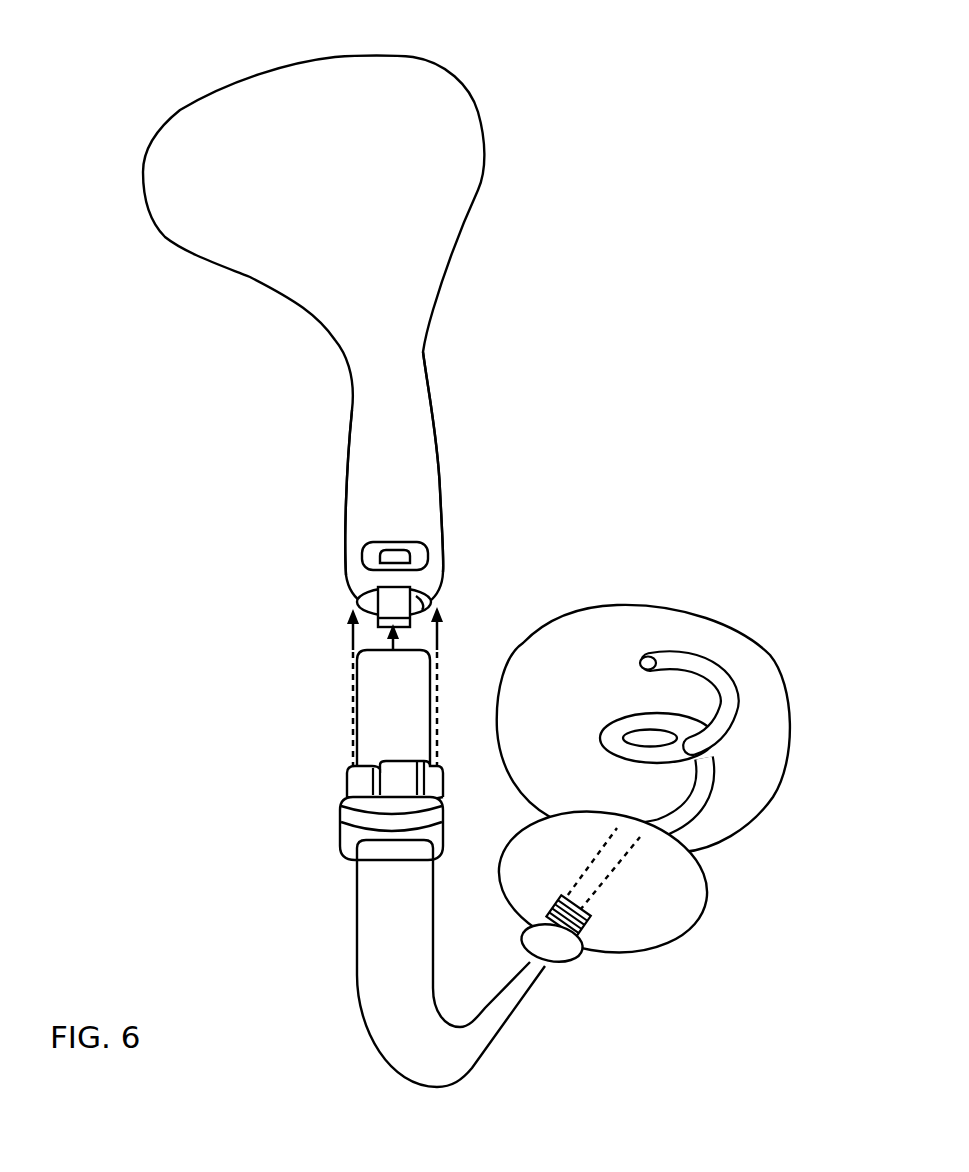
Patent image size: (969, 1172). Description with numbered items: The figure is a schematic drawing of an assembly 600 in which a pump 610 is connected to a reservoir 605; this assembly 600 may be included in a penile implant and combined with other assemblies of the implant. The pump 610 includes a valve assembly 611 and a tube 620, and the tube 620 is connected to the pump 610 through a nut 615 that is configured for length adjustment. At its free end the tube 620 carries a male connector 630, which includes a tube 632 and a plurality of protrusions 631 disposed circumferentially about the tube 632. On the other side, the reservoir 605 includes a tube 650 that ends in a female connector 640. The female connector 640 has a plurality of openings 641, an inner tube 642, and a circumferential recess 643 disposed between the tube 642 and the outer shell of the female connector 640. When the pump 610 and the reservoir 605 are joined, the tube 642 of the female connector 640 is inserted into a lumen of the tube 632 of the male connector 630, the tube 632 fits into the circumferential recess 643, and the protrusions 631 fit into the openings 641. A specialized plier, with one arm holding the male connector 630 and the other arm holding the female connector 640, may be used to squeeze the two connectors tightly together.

The assembly 600 is at (96, 143).
The reservoir 605 is at (432, 142).
The tube 650 is at (383, 465).
The openings 641 is at (413, 562).
The female connector 640 is at (357, 587).
The circumferential recess 643 is at (420, 600).
The tube 642 is at (388, 631).
The tube 632 is at (383, 703).
The protrusions 631 is at (345, 785).
The male connector 630 is at (360, 827).
The tube 620 is at (490, 1047).
The pump 610 is at (677, 630).
The valve assembly 611 is at (667, 895).
The nut 615 is at (558, 955).